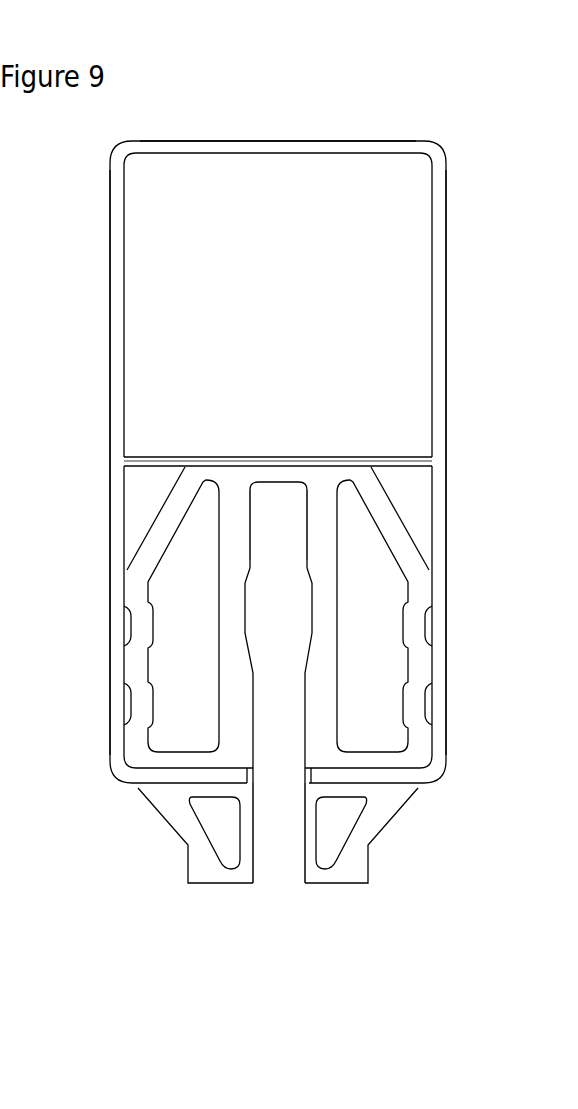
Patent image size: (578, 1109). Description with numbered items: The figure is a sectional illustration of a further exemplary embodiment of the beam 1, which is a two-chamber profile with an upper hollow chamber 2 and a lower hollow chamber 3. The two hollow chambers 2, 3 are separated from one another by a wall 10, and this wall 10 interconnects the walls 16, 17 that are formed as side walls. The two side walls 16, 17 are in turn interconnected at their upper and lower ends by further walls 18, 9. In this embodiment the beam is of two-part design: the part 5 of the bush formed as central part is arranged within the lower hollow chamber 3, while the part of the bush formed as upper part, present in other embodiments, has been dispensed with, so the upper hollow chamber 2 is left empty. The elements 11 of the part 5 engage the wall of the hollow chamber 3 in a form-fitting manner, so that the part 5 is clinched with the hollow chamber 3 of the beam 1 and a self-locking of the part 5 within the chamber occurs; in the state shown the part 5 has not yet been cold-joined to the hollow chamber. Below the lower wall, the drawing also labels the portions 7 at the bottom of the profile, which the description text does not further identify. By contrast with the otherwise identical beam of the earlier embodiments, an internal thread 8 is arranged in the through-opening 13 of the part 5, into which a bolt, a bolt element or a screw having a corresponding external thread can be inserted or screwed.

The beam 1 is at (412, 88).
The upper hollow chamber 2 is at (368, 200).
The lower hollow chamber 3 is at (138, 487).
The part of the bush formed as central part 5 is at (320, 603).
The foot 7 is at (202, 833).
The internal thread 8 is at (250, 535).
The wall 9 is at (177, 780).
The wall 10 is at (215, 458).
The elements of the part 11 is at (155, 632).
The through-opening 13 is at (255, 583).
The wall 16 is at (440, 256).
The wall 17 is at (118, 270).
The wall 18 is at (223, 142).